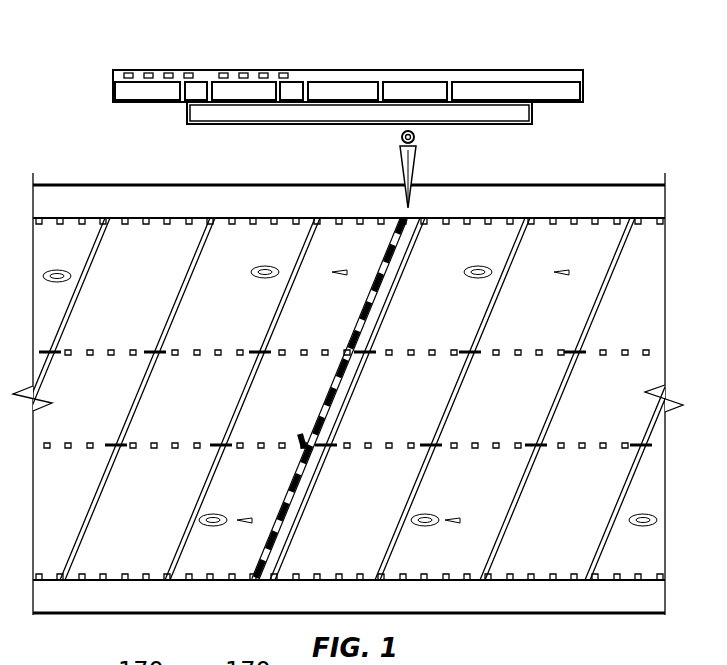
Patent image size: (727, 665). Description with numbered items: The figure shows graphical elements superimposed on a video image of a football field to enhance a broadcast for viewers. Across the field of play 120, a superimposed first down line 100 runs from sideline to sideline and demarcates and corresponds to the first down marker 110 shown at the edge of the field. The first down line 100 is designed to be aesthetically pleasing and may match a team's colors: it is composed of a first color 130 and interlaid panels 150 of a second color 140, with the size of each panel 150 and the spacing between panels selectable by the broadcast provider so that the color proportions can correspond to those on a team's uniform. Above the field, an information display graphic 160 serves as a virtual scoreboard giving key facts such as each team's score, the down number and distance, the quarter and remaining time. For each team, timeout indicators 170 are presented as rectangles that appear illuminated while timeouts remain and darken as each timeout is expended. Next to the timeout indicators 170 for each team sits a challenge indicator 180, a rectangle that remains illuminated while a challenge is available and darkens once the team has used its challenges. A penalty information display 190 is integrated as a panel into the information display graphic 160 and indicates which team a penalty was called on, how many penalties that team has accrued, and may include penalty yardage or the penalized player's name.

The first down line 100 is at (328, 330).
The first down marker 110 is at (402, 140).
The field of play 120 is at (155, 238).
The first color 130 is at (365, 312).
The second color 140 is at (337, 398).
The interlaid panels 150 is at (302, 436).
The information display graphic 160 is at (605, 88).
The timeout indicator 170 is at (168, 72).
The challenge indicator 180 is at (188, 72).
The penalty information display 190 is at (560, 101).